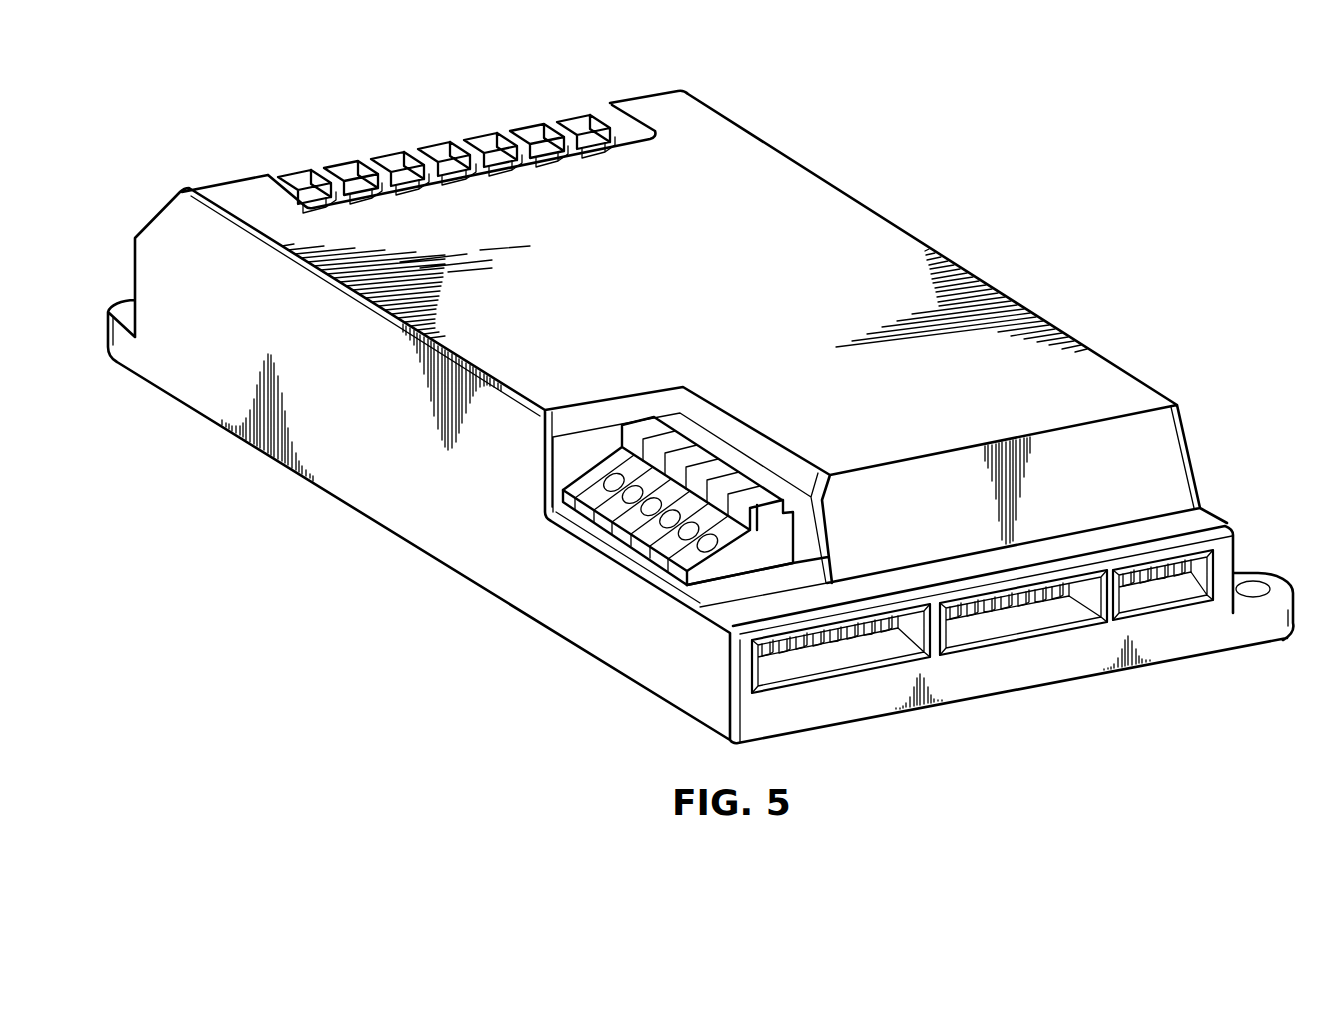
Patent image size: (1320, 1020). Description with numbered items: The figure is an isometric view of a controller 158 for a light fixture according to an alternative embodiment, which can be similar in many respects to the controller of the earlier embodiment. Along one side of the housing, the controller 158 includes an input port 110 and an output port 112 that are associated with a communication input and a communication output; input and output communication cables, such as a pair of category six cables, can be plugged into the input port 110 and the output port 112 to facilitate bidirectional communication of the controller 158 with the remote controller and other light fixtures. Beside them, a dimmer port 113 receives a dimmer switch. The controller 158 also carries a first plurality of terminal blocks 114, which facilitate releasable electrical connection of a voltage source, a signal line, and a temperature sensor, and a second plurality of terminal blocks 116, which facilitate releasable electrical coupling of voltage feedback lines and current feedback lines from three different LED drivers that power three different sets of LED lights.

The controller 158 is at (1100, 114).
The second plurality of terminal blocks 116 is at (294, 172).
The first plurality of terminal blocks 114 is at (678, 573).
The input port 110 is at (828, 694).
The output port 112 is at (1025, 657).
The dimmer port 113 is at (1163, 632).